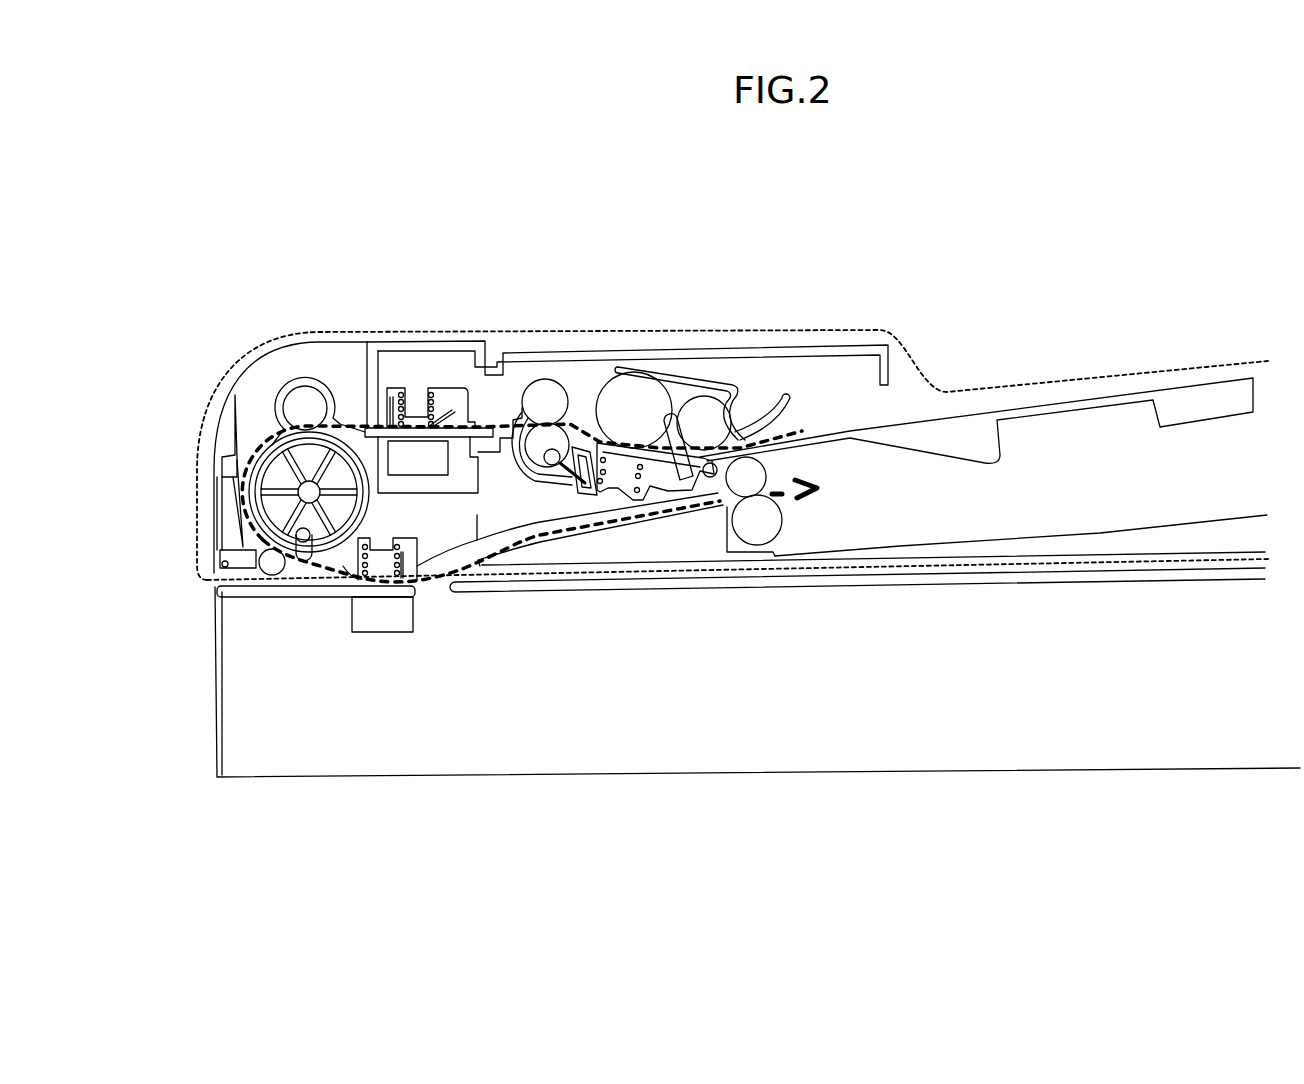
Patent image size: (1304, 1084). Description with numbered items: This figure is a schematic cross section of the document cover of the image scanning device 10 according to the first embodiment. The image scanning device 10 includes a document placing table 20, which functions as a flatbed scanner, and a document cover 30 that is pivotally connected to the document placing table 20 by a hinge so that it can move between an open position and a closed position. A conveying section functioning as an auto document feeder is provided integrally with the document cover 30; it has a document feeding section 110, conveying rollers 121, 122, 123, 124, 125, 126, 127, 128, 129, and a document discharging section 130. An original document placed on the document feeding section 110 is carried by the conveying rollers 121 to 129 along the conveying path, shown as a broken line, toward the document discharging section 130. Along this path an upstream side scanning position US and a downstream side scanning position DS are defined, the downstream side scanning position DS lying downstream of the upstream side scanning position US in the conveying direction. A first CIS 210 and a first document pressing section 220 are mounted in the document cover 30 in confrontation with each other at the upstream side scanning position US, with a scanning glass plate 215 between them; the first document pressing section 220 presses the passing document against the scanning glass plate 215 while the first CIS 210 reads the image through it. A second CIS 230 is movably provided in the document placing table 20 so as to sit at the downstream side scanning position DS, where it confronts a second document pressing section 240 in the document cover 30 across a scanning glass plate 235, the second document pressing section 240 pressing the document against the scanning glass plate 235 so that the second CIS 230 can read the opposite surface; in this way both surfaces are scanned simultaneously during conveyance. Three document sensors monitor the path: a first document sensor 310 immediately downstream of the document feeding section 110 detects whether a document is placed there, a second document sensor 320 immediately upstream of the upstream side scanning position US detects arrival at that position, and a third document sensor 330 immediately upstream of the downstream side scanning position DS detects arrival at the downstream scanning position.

The image scanning device 10 is at (270, 274).
The document placing table 20 is at (428, 753).
The document cover 30 is at (782, 330).
The document feeding section 110 is at (908, 427).
The conveying roller 121 is at (705, 415).
The conveying roller 122 is at (632, 395).
The conveying roller 123 is at (553, 435).
The conveying roller 124 is at (535, 400).
The conveying roller 125 is at (293, 408).
The conveying roller 126 is at (235, 395).
The conveying roller 127 is at (273, 568).
The conveying roller 128 is at (763, 470).
The conveying roller 129 is at (768, 527).
The document discharging section 130 is at (1092, 532).
The first CIS 210 is at (364, 418).
The scanning glass plate 215 is at (458, 446).
The first document pressing section 220 is at (420, 417).
The second CIS 230 is at (387, 616).
The scanning glass plate 235 is at (238, 599).
The second document pressing section 240 is at (427, 580).
The first document sensor 310 is at (687, 392).
The second document sensor 320 is at (493, 426).
The third document sensor 330 is at (302, 557).
The upstream side scanning position US is at (478, 494).
The downstream side scanning position DS is at (345, 602).